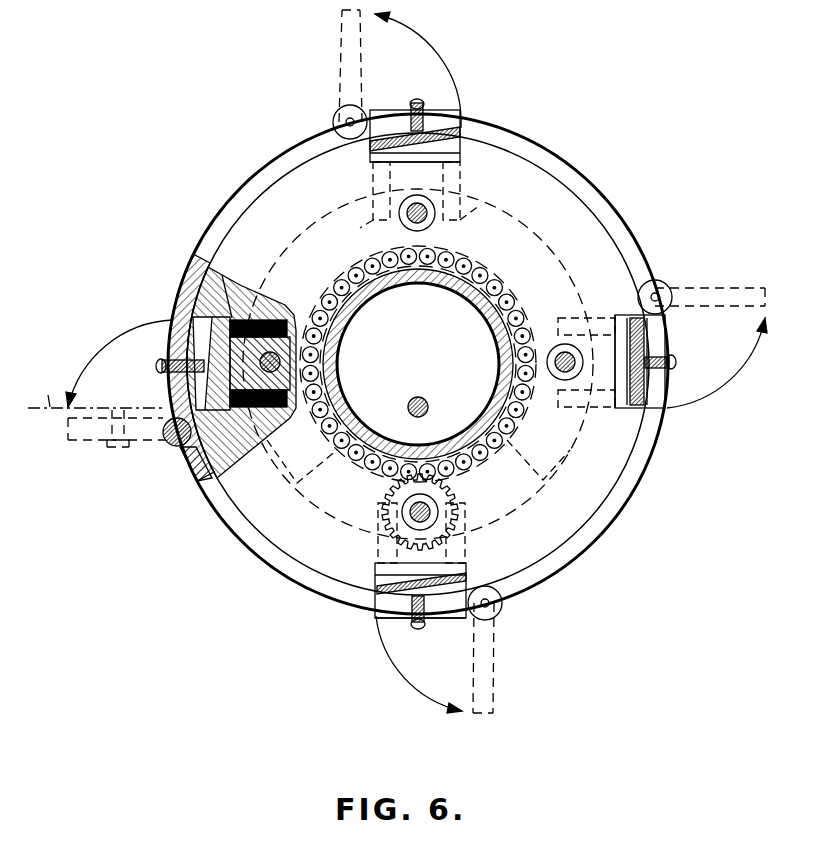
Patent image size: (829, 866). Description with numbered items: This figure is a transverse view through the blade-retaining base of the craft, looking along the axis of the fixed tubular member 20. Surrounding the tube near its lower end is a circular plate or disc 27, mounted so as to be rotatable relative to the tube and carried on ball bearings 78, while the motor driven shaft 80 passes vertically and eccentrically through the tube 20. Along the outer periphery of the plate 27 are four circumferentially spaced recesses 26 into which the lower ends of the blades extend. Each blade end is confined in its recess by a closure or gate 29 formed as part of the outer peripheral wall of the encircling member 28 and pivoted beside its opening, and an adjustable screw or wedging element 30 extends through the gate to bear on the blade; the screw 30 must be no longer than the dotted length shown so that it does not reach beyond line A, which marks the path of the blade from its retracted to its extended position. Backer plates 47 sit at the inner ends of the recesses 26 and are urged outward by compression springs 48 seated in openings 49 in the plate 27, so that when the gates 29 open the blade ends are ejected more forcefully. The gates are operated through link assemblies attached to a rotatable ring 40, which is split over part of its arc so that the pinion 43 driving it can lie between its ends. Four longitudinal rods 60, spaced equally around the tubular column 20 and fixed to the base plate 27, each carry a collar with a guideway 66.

The tubular member 20 is at (478, 298).
The recesses 26 is at (462, 145).
The circular plate or disc 27 is at (190, 447).
The encircling member 28 is at (207, 230).
The closure or gate 29 is at (360, 70).
The adjustable screw or wedging element 30 is at (419, 104).
The rotatable ring 40 is at (543, 232).
The pinion 43 is at (448, 493).
The backer plates 47 is at (388, 157).
The compression springs 48 is at (276, 318).
The openings 49 is at (481, 205).
The longitudinal rods 60 is at (561, 371).
The guideway 66 is at (425, 222).
The ball bearings 78 is at (500, 285).
The motor driven shaft 80 is at (428, 398).